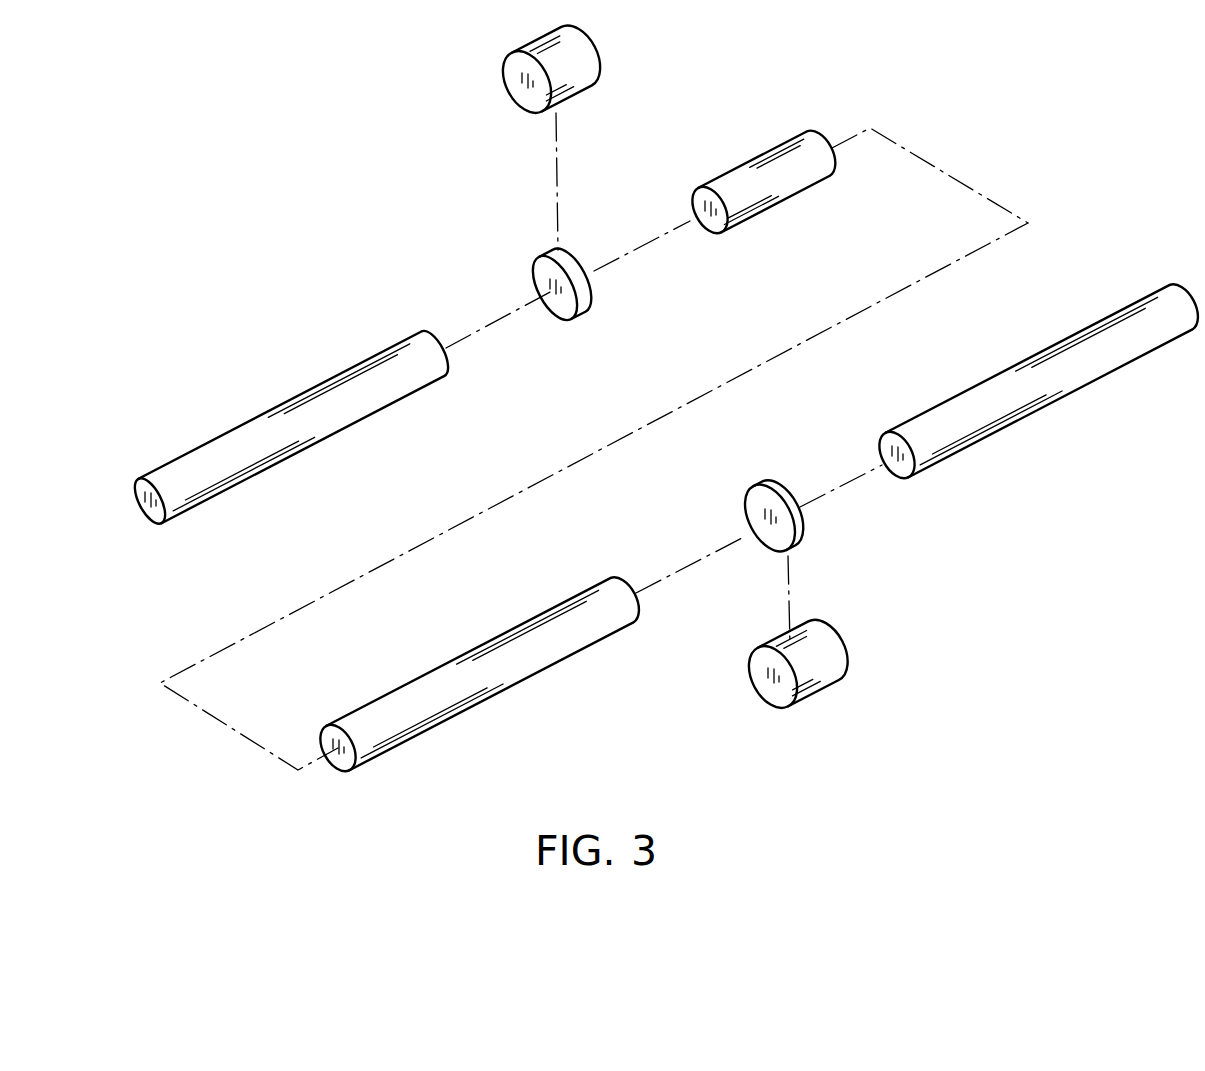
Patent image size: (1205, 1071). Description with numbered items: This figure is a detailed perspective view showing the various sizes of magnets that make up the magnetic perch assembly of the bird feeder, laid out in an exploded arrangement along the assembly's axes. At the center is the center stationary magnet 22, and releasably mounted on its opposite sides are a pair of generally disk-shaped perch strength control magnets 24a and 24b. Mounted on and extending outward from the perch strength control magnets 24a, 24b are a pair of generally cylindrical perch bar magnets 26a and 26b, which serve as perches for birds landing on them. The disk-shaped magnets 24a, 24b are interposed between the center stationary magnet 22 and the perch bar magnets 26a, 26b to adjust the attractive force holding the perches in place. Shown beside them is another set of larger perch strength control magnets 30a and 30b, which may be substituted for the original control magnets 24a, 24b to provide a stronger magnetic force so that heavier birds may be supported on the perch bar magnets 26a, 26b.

The center stationary magnet 22 is at (773, 163).
The perch strength control magnet 24a is at (543, 273).
The perch strength control magnet 24b is at (797, 513).
The perch bar magnet 26a is at (275, 430).
The perch bar magnet 26b is at (1043, 377).
The perch strength control magnet 30a is at (513, 72).
The perch strength control magnet 30b is at (823, 683).